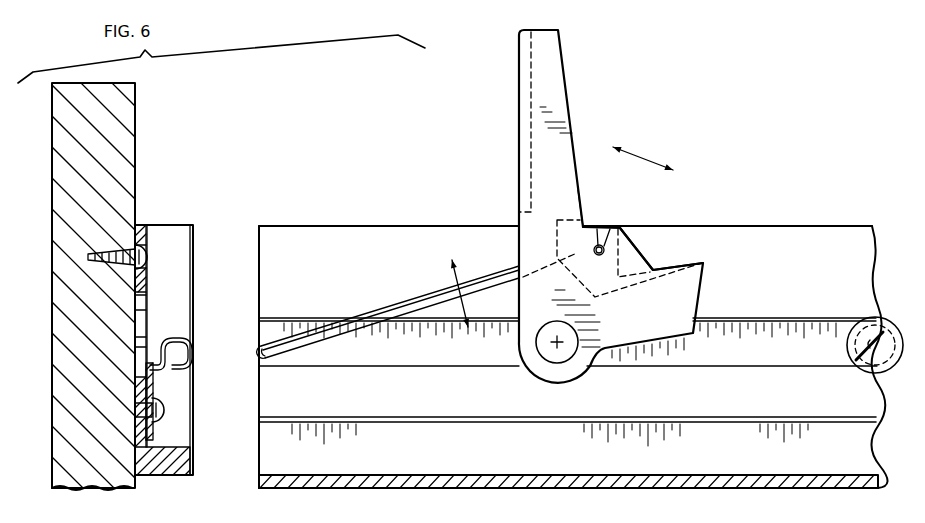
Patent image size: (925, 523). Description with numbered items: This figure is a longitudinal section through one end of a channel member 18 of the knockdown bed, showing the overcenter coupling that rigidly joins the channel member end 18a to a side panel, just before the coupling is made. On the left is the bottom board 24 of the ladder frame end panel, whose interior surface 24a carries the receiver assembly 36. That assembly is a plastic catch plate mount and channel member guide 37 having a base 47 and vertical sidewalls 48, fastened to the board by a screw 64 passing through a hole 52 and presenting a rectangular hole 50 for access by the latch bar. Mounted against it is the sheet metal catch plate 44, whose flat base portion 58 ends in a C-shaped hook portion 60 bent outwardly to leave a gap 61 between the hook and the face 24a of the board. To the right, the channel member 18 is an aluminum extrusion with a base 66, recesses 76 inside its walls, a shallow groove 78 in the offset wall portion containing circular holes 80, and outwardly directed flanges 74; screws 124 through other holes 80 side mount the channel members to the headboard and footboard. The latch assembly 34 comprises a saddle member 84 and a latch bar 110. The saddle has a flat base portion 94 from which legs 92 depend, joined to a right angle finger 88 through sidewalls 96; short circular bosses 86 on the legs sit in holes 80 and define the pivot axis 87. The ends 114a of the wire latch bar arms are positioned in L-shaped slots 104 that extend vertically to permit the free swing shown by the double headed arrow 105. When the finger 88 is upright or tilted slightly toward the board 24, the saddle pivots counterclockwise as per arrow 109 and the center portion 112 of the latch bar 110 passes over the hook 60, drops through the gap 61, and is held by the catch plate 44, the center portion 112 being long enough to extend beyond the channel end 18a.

The channel member 18 is at (579, 335).
The end of the channel member 18a is at (258, 240).
The bottom board 24 is at (137, 143).
The interior surface 24a is at (147, 325).
The latch assembly 34 is at (612, 211).
The receiver assembly 36 is at (184, 328).
The catch plate mount and channel member guide 37 is at (184, 342).
The catch plate 44 is at (190, 389).
The base 47 is at (178, 474).
The sidewalls 48 is at (184, 356).
The rectangular hole 50 is at (143, 311).
The hole 52 is at (132, 248).
The flat base portion 58 is at (145, 428).
The hook portion 60 is at (188, 352).
The gap 61 is at (155, 342).
The screw 64 is at (152, 258).
The base 66 is at (440, 482).
The flanges 74 is at (378, 4).
The recesses 76 is at (707, 445).
The groove 78 is at (760, 350).
The holes 80 is at (850, 345).
The saddle member 84 is at (582, 203).
The bosses 86 is at (568, 353).
The pivot axis 87 is at (555, 345).
The finger 88 is at (518, 106).
The legs 92 is at (567, 301).
The flat base portion 94 is at (706, 261).
The sidewalls 96 is at (559, 92).
The L-shaped slots 104 is at (590, 226).
The double headed arrow 105 is at (457, 276).
The arrow 109 is at (655, 162).
The latch bar 110 is at (388, 328).
The center portion 112 is at (268, 360).
The ends of the latch bar arms 114a is at (602, 252).
The screws 124 is at (869, 328).